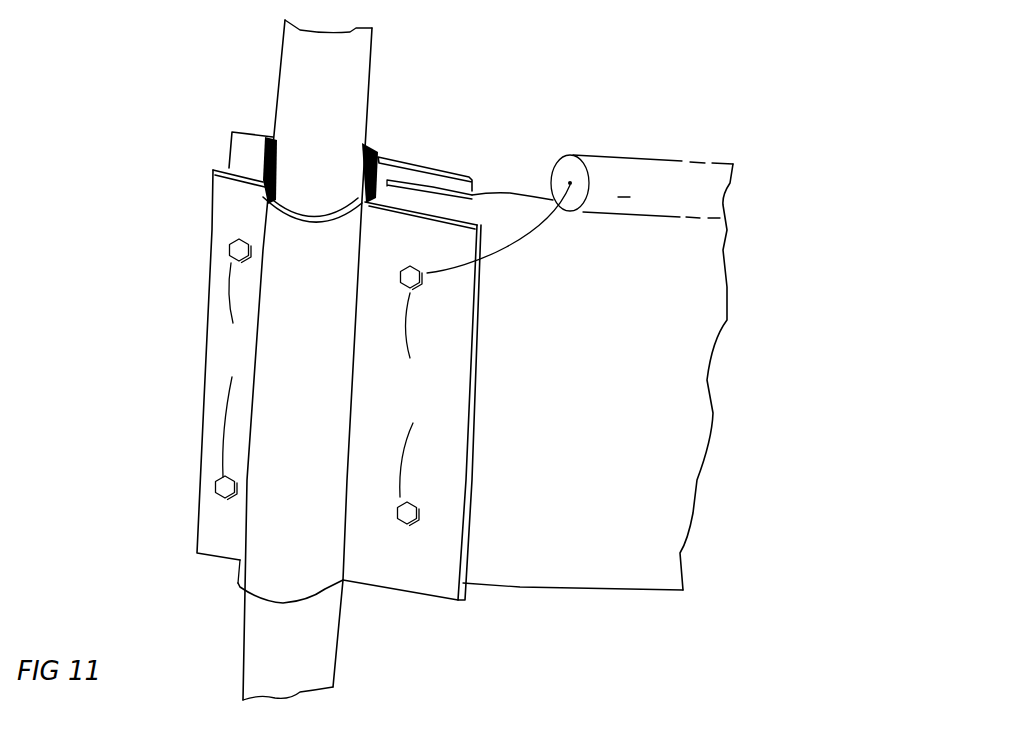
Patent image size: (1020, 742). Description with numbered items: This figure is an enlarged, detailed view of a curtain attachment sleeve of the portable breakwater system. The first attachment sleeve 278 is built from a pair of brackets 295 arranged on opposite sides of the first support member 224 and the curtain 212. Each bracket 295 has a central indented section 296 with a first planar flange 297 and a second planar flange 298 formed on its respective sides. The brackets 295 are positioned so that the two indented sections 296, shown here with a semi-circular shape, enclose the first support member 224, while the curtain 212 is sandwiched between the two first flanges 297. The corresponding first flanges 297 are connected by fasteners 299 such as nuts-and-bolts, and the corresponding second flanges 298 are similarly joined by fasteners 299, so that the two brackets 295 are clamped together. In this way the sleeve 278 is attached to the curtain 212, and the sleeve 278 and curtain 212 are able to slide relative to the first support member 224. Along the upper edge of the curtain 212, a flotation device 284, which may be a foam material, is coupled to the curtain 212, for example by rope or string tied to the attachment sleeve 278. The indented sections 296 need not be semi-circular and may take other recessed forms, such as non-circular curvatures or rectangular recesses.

The curtain 212 is at (628, 430).
The first support member 224 is at (357, 100).
The first attachment sleeve 278 is at (182, 258).
The flotation device 284 is at (682, 168).
The bracket 295 is at (428, 162).
The central indented section 296 is at (533, 233).
The first planar flange 297 is at (453, 180).
The second planar flange 298 is at (252, 148).
The fasteners (nuts-and-bolts) 299 is at (325, 382).